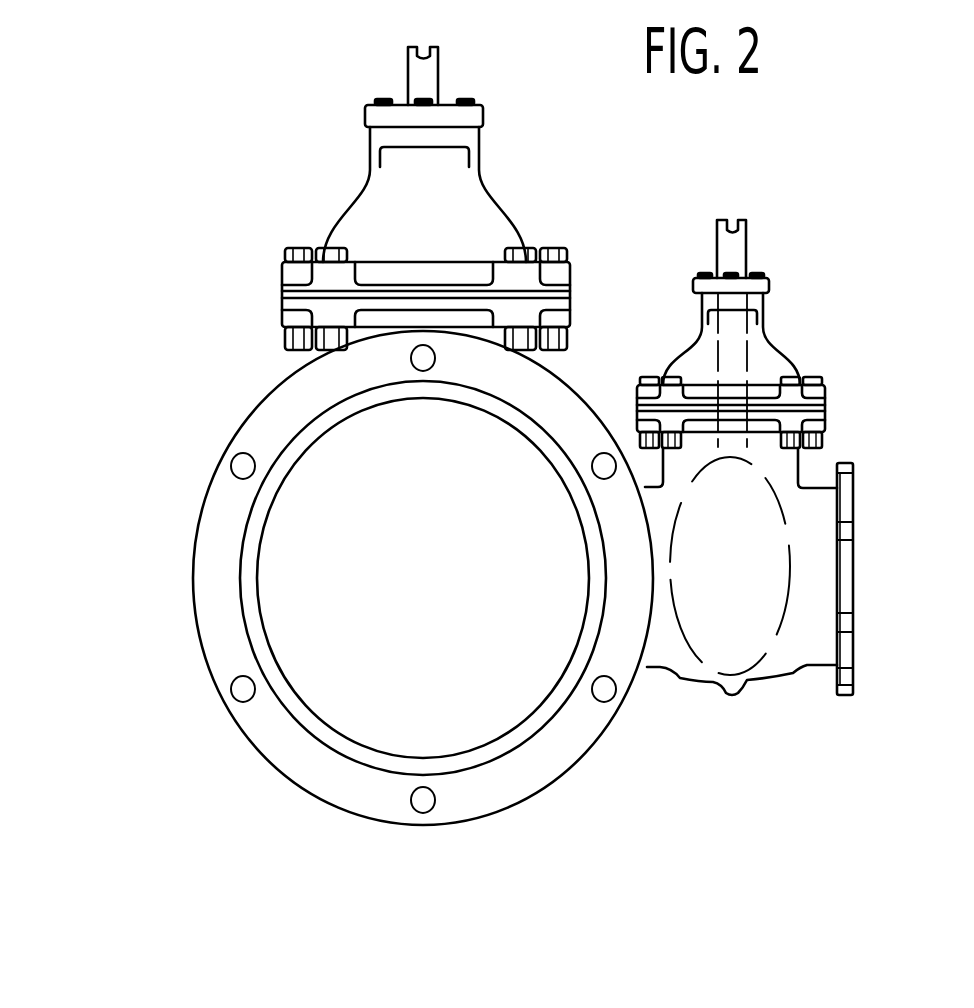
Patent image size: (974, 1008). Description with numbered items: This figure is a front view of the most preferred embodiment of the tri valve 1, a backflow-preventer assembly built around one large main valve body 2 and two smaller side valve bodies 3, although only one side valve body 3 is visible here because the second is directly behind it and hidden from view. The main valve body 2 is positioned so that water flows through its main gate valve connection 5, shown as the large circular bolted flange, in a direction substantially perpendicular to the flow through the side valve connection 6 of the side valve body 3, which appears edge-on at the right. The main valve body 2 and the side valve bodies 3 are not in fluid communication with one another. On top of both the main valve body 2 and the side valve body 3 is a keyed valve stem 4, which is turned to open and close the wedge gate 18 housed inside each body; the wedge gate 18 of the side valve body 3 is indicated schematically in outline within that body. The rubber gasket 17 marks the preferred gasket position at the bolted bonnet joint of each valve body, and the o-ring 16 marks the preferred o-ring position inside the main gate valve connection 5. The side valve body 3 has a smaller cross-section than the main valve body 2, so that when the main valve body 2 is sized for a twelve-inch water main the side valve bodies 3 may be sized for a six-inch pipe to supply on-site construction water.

The tri valve 1 is at (157, 162).
The main valve body 2 is at (445, 200).
The side valve body 3 is at (762, 347).
The keyed valve stem 4 is at (415, 70).
The main gate valve connection 5 is at (555, 762).
The side valve connection 6 is at (847, 580).
The o-ring 16 is at (338, 740).
The rubber gasket 17 is at (280, 293).
The wedge gate 18 is at (758, 645).